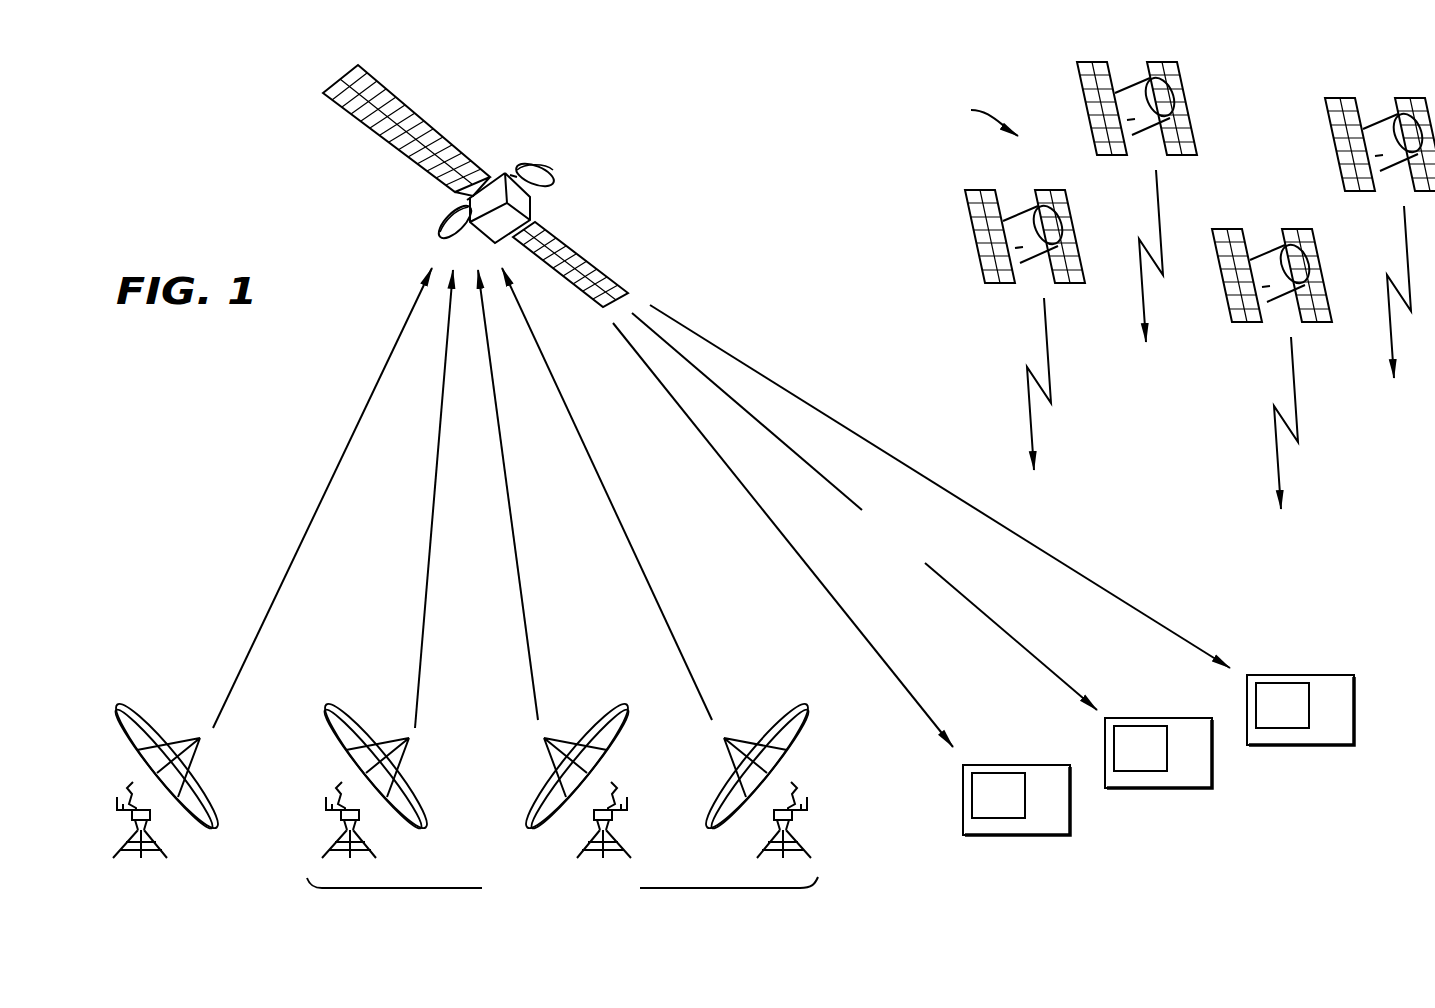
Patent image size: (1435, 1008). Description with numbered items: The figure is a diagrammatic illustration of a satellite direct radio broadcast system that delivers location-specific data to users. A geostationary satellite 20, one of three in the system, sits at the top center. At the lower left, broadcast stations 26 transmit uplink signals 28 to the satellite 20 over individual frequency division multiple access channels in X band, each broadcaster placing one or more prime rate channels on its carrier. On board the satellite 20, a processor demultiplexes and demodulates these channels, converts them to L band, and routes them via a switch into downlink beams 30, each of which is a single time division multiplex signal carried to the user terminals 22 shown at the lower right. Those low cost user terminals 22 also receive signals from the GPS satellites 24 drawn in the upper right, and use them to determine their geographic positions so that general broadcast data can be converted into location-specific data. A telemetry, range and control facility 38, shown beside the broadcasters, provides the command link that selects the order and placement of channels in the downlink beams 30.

The satellite 20 is at (615, 148).
The user terminals 22 is at (995, 765).
The GPS satellites 24 is at (1188, 114).
The broadcast stations 26 is at (341, 703).
The uplink signals 28 is at (428, 558).
The downlink beams 30 is at (912, 689).
The telemetry, range and control (TRC) facility 38 is at (150, 723).